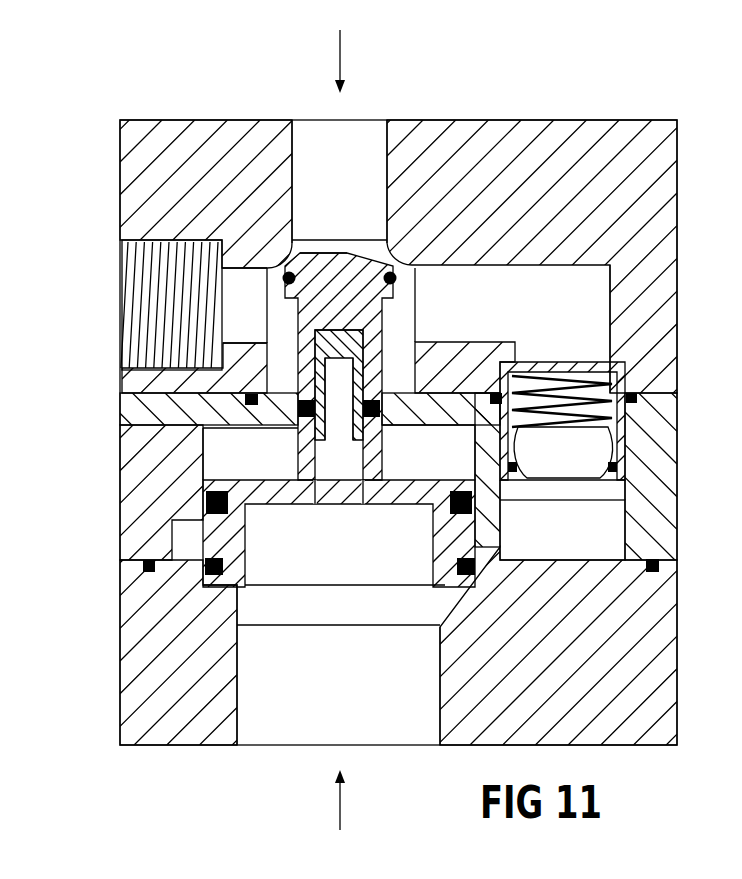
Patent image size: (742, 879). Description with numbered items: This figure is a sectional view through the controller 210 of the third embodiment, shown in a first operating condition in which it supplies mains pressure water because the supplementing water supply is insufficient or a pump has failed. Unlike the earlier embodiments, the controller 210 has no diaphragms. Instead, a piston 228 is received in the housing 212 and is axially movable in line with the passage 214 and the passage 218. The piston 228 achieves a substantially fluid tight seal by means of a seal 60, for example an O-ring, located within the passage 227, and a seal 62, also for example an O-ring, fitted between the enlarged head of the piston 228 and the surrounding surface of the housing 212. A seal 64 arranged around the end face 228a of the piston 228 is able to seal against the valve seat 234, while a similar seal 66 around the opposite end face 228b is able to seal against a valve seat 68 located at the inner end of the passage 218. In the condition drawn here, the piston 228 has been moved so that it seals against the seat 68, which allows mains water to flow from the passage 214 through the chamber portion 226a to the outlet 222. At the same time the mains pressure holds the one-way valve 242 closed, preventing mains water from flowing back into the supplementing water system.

The controller 210 is at (378, 82).
The housing 212 is at (601, 135).
The passage 214 is at (317, 140).
The passage 218 is at (292, 718).
The outlet 222 is at (155, 333).
The chamber portion 226a is at (397, 322).
The passage 227 is at (300, 389).
The piston 228 is at (327, 277).
The end face 228a is at (360, 256).
The end face 228b is at (441, 590).
The valve seat 234 is at (271, 259).
The one-way valve 242 is at (557, 458).
The seal 60 is at (298, 407).
The seal 62 is at (207, 500).
The seal 64 is at (288, 270).
The seal 66 is at (222, 580).
The valve seat 68 is at (230, 602).